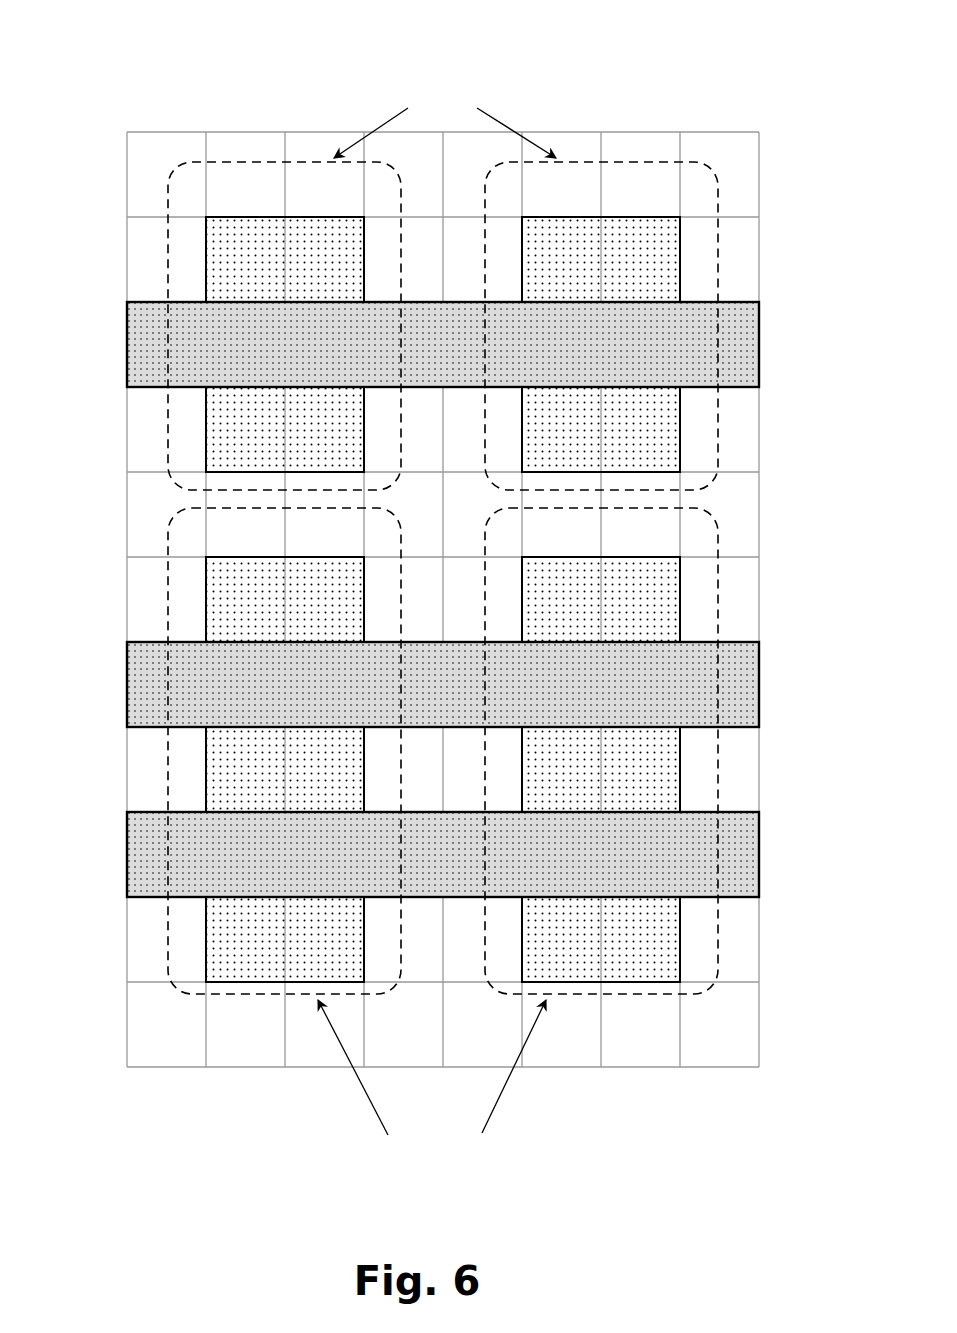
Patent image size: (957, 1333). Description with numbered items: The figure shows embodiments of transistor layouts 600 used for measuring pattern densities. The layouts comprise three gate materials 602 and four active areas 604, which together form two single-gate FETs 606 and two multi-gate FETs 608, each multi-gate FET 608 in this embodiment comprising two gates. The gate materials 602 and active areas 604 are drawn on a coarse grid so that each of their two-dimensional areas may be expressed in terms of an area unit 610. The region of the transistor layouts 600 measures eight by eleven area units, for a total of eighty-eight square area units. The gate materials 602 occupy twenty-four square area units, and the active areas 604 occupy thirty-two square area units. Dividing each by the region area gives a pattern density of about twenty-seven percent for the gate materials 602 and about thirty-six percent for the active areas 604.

The transistor layouts 600 is at (421, 588).
The gate materials 602 is at (743, 297).
The active areas 604 is at (242, 212).
The single-gate FETs 606 is at (236, 158).
The multi-gate FETs 608 is at (274, 998).
The area unit (AU) 610 is at (132, 1060).